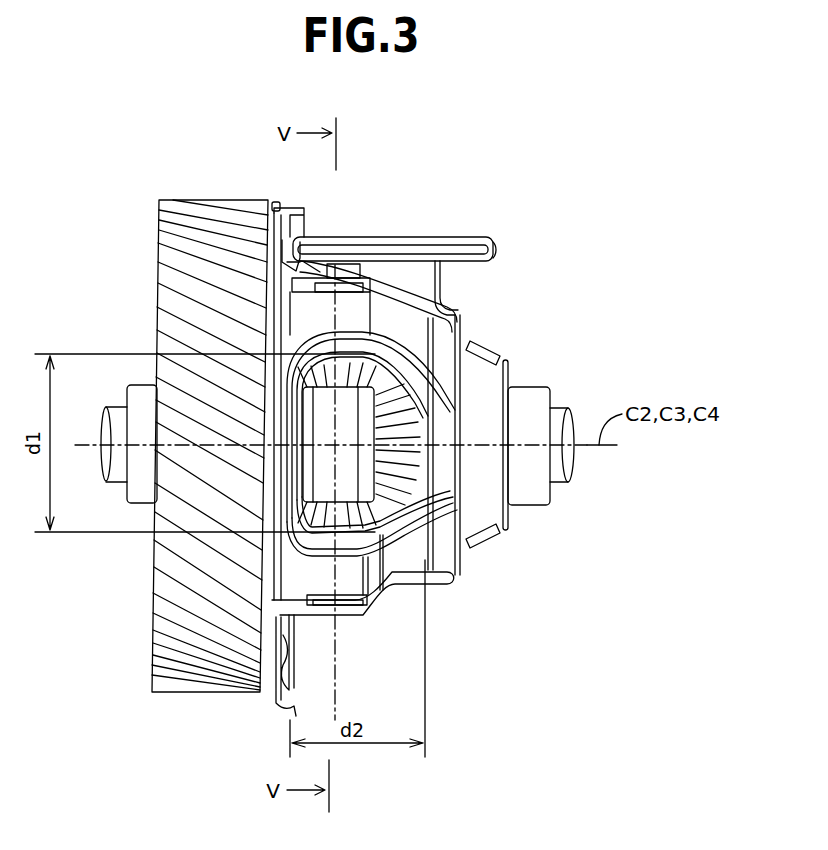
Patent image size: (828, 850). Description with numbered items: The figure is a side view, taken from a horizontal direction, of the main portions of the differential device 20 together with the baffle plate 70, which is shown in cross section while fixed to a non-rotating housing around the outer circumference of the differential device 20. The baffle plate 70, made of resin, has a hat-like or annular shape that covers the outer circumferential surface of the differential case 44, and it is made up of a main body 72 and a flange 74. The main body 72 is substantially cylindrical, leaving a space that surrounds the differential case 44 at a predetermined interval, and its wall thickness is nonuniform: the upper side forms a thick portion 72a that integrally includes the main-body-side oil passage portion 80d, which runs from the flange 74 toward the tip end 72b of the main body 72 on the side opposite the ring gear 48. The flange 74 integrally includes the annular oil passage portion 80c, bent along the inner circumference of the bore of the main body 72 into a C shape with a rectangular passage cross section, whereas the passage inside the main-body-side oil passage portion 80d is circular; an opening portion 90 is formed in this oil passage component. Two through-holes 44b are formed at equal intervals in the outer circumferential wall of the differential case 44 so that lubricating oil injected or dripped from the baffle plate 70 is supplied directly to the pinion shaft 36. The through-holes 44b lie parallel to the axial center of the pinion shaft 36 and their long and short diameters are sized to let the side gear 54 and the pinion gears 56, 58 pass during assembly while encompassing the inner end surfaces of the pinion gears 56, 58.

The differential device 20 is at (525, 345).
The pinion shaft 36 is at (372, 535).
The differential case 44 is at (456, 328).
The through-holes 44b is at (430, 418).
The ring gear 48 is at (160, 281).
The side gear 54 is at (436, 490).
The pinion gear 56 is at (383, 288).
The pinion gear 58 is at (383, 604).
The baffle plate 70 is at (393, 229).
The main body 72 is at (447, 232).
The thick portion 72a is at (441, 262).
The tip end 72b is at (495, 252).
The flange 74 is at (292, 202).
The annular oil passage portion 80c is at (308, 250).
The main-body-side oil passage portion 80d is at (373, 280).
The opening portion 90 is at (298, 293).